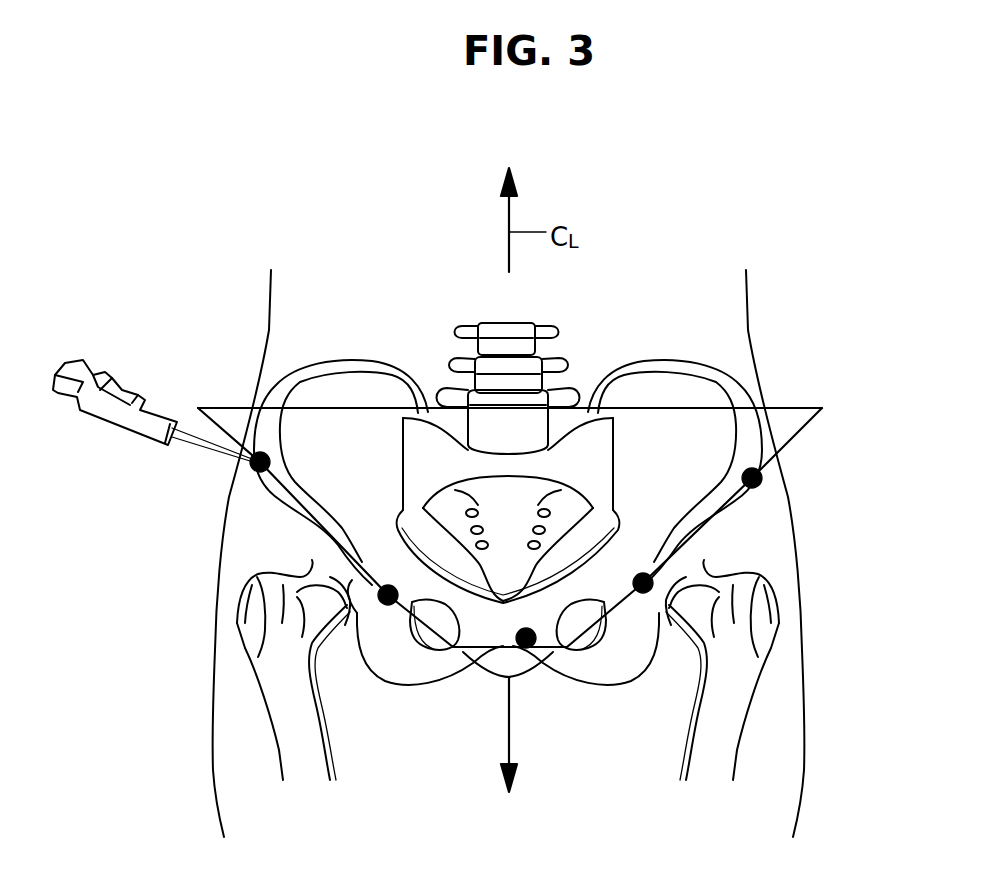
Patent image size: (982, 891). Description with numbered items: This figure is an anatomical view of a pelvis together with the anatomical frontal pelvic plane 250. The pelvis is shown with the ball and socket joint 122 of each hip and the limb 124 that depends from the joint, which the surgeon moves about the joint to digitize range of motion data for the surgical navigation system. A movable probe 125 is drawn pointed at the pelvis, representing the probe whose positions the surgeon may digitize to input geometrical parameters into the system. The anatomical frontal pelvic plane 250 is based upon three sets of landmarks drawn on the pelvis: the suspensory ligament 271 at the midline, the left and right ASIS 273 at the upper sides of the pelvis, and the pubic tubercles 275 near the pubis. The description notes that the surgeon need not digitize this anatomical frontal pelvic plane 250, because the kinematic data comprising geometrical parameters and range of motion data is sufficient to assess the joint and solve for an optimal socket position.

The ball and socket joint 122 is at (297, 702).
The limb 124 is at (357, 613).
The movable probe 125 is at (155, 413).
The anatomical frontal pelvic plane 250 is at (803, 430).
The suspensory ligament 271 is at (532, 645).
The left and right ASIS 273 is at (250, 468).
The pubic tubercles 275 is at (378, 594).